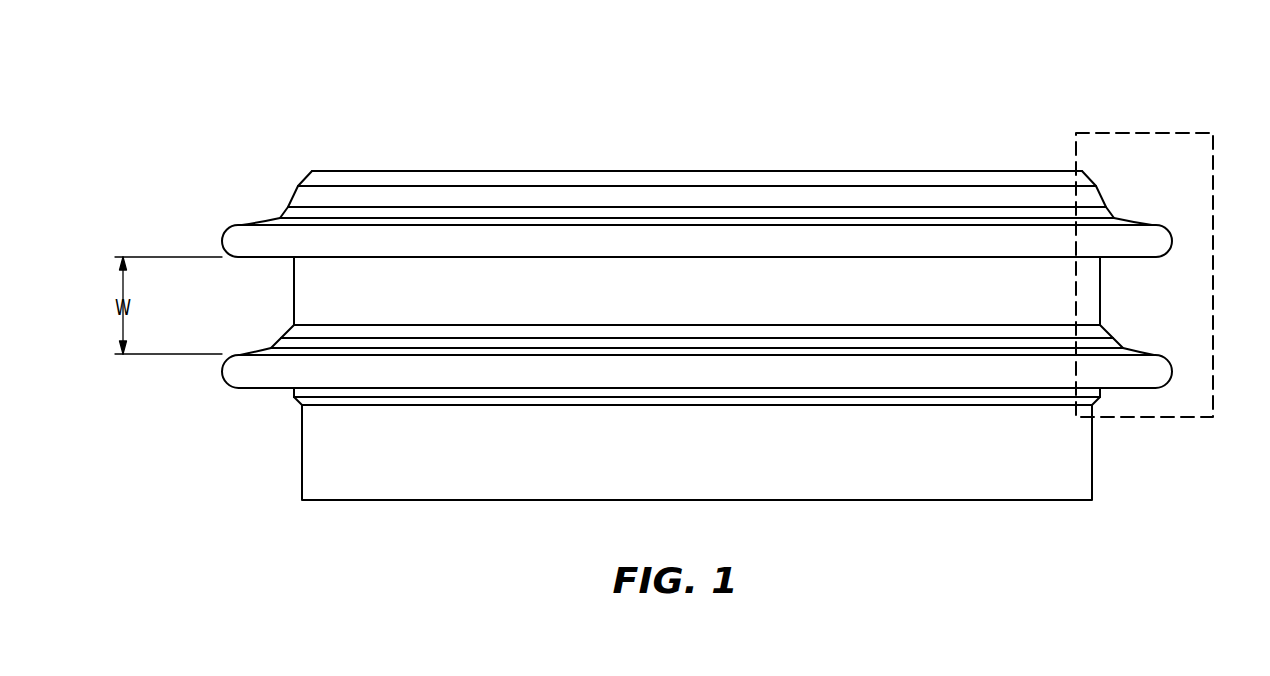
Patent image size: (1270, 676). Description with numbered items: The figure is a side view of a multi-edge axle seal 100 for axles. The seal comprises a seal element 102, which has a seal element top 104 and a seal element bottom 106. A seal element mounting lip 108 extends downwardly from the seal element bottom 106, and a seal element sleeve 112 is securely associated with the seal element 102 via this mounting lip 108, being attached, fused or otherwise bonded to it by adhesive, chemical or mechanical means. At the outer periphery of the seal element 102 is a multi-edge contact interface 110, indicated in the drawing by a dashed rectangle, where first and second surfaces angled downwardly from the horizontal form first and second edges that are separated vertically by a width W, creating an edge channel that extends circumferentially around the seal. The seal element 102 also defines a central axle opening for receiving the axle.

The multi-edge axle seal 100 is at (1050, 95).
The seal element 102 is at (667, 170).
The seal element top 104 is at (773, 170).
The seal element bottom 106 is at (260, 390).
The seal element mounting lip 108 is at (617, 390).
The multi-edge contact interface 110 is at (1183, 417).
The seal element sleeve 112 is at (848, 473).